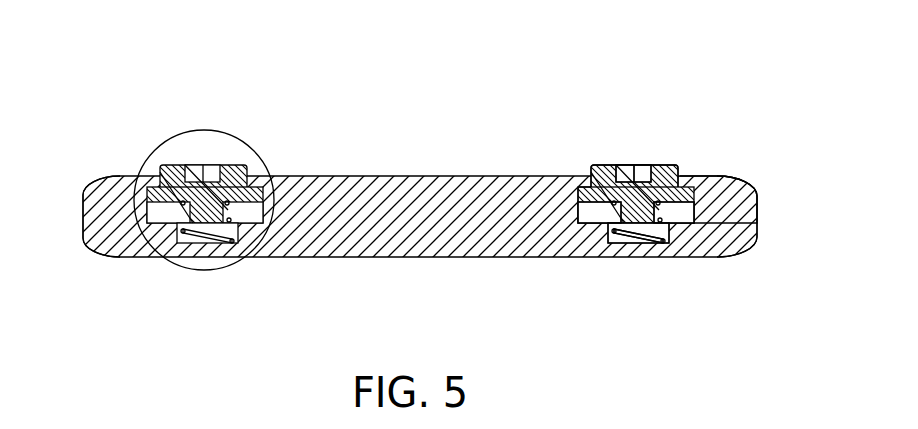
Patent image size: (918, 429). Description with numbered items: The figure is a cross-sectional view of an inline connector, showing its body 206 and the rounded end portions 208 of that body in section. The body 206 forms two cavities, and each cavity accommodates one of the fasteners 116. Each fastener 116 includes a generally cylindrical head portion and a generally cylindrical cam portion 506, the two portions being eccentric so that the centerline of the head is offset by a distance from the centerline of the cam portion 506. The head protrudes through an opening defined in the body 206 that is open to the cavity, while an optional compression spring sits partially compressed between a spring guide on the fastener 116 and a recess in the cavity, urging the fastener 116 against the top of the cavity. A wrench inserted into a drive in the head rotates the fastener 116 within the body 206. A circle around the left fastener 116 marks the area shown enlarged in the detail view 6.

The fastener 116 is at (475, 165).
The body 206 is at (342, 210).
The rounded plate ends 208 is at (113, 247).
The cam portion 506 is at (725, 196).
The detail circle (FIG. 6) 6 is at (197, 270).